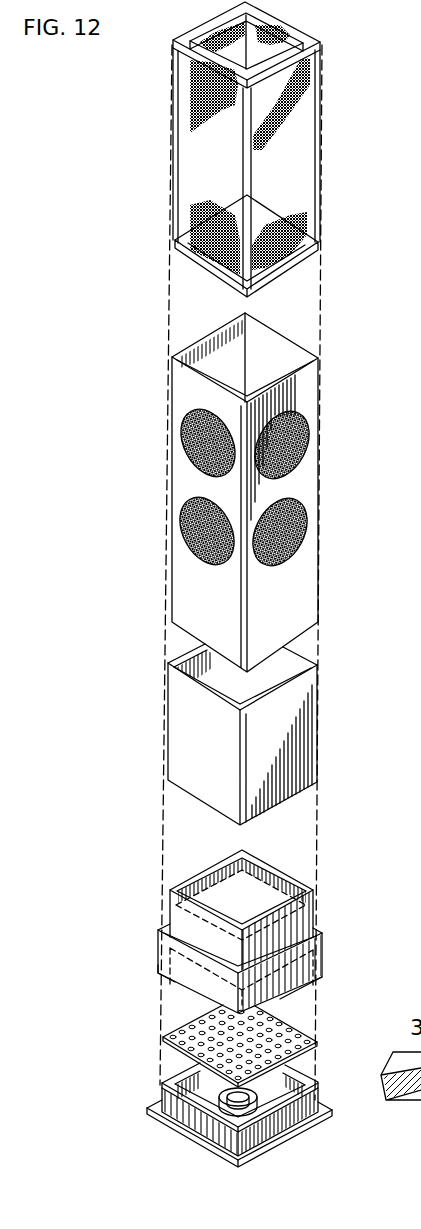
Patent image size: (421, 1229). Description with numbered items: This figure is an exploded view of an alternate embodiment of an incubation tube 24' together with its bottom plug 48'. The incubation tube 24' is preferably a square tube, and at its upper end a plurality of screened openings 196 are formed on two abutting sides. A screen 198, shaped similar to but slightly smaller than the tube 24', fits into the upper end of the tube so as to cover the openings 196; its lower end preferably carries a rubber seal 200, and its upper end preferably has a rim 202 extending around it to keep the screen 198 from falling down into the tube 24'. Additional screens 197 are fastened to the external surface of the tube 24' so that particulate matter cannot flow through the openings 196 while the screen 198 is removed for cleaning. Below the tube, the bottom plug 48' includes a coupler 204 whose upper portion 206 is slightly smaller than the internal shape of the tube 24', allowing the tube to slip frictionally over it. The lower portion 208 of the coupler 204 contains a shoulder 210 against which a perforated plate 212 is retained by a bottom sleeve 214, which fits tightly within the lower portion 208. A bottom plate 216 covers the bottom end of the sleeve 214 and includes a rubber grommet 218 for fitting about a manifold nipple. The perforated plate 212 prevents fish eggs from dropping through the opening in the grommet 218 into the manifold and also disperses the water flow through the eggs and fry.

The rim 202 is at (300, 32).
The screen 198 is at (318, 162).
The rubber seal 200 is at (272, 278).
The screened openings 196 is at (186, 439).
The screens 197 is at (302, 450).
The incubation tube 24' is at (233, 492).
The upper portion 206 is at (316, 903).
The coupler 204 is at (329, 953).
The lower portion 208 is at (323, 975).
The shoulder 210 is at (157, 970).
The perforated plate 212 is at (163, 1037).
The bottom sleeve 214 is at (314, 1112).
The bottom plate 216 is at (302, 1138).
The rubber grommet 218 is at (205, 1112).
The bottom plug 48' is at (221, 1011).